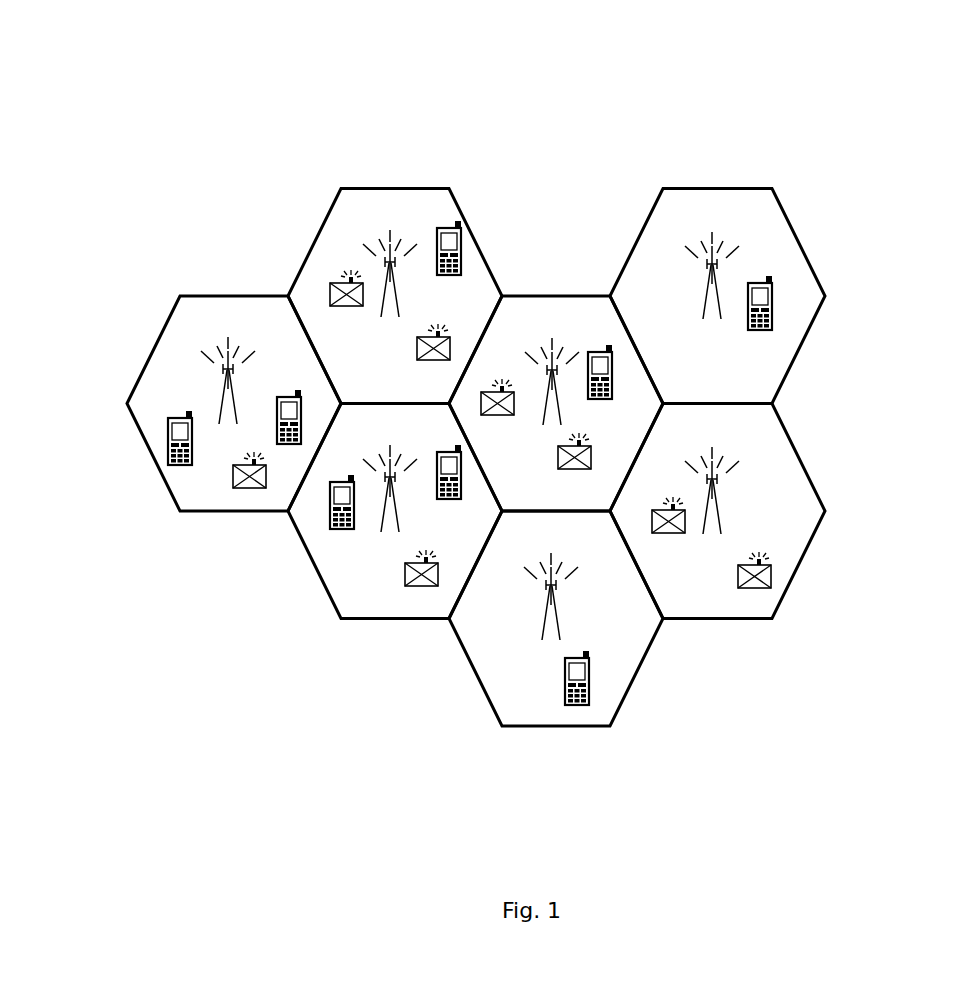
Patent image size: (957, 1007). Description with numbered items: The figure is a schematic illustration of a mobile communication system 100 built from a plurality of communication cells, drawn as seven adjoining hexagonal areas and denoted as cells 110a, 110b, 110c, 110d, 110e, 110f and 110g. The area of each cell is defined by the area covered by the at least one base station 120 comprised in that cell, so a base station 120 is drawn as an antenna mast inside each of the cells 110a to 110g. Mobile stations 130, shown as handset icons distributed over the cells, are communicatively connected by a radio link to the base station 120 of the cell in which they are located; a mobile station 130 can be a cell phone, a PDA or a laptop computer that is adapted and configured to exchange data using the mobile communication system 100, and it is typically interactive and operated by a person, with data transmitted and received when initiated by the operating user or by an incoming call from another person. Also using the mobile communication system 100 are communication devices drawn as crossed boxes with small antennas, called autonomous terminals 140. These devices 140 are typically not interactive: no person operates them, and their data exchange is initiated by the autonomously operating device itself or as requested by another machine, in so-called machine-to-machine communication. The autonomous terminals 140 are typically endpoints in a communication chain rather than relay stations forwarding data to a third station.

The mobile communication system 100 is at (494, 135).
The communication cell 110a is at (202, 497).
The communication cell 110b is at (332, 250).
The communication cell 110c is at (342, 583).
The communication cell 110d is at (590, 320).
The communication cell 110e is at (492, 671).
The communication cell 110f is at (782, 233).
The communication cell 110g is at (803, 500).
The base station 120 is at (383, 248).
The mobile station 130 is at (168, 442).
The autonomous terminal 140 is at (328, 293).